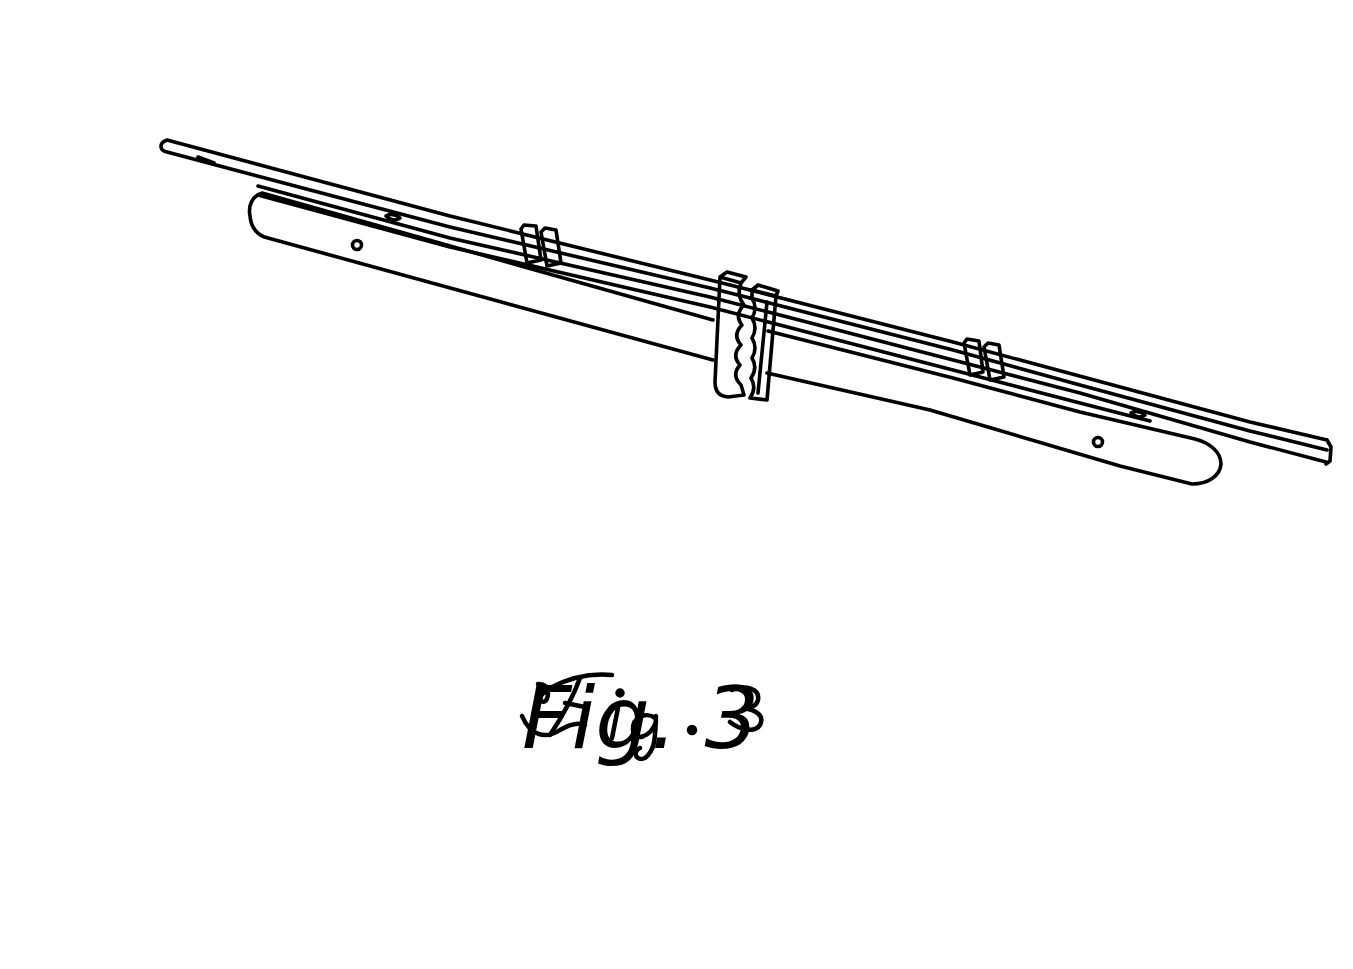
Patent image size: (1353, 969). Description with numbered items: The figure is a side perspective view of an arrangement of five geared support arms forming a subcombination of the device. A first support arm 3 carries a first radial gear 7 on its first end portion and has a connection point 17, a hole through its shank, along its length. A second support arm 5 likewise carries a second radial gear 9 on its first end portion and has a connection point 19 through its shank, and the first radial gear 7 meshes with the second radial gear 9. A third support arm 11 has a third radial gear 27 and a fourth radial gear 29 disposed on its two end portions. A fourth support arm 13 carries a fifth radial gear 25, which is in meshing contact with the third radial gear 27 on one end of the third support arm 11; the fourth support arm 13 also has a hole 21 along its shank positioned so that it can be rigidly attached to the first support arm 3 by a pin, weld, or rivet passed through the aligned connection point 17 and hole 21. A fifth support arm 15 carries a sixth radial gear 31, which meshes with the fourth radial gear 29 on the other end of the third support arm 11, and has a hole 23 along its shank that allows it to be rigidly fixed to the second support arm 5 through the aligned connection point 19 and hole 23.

The first support arm 3 is at (592, 305).
The second support arm 5 is at (917, 388).
The first radial gear 7 is at (722, 366).
The second radial gear 9 is at (748, 407).
The third support arm 11 is at (910, 350).
The fourth support arm 13 is at (188, 163).
The fifth support arm 15 is at (1280, 448).
The connection point 17 is at (354, 249).
The connection point 19 is at (1094, 448).
The hole 21 is at (394, 217).
The hole 23 is at (1135, 415).
The fifth radial gear 25 is at (528, 227).
The third radial gear 27 is at (557, 235).
The fourth radial gear 29 is at (977, 340).
The sixth radial gear 31 is at (997, 360).